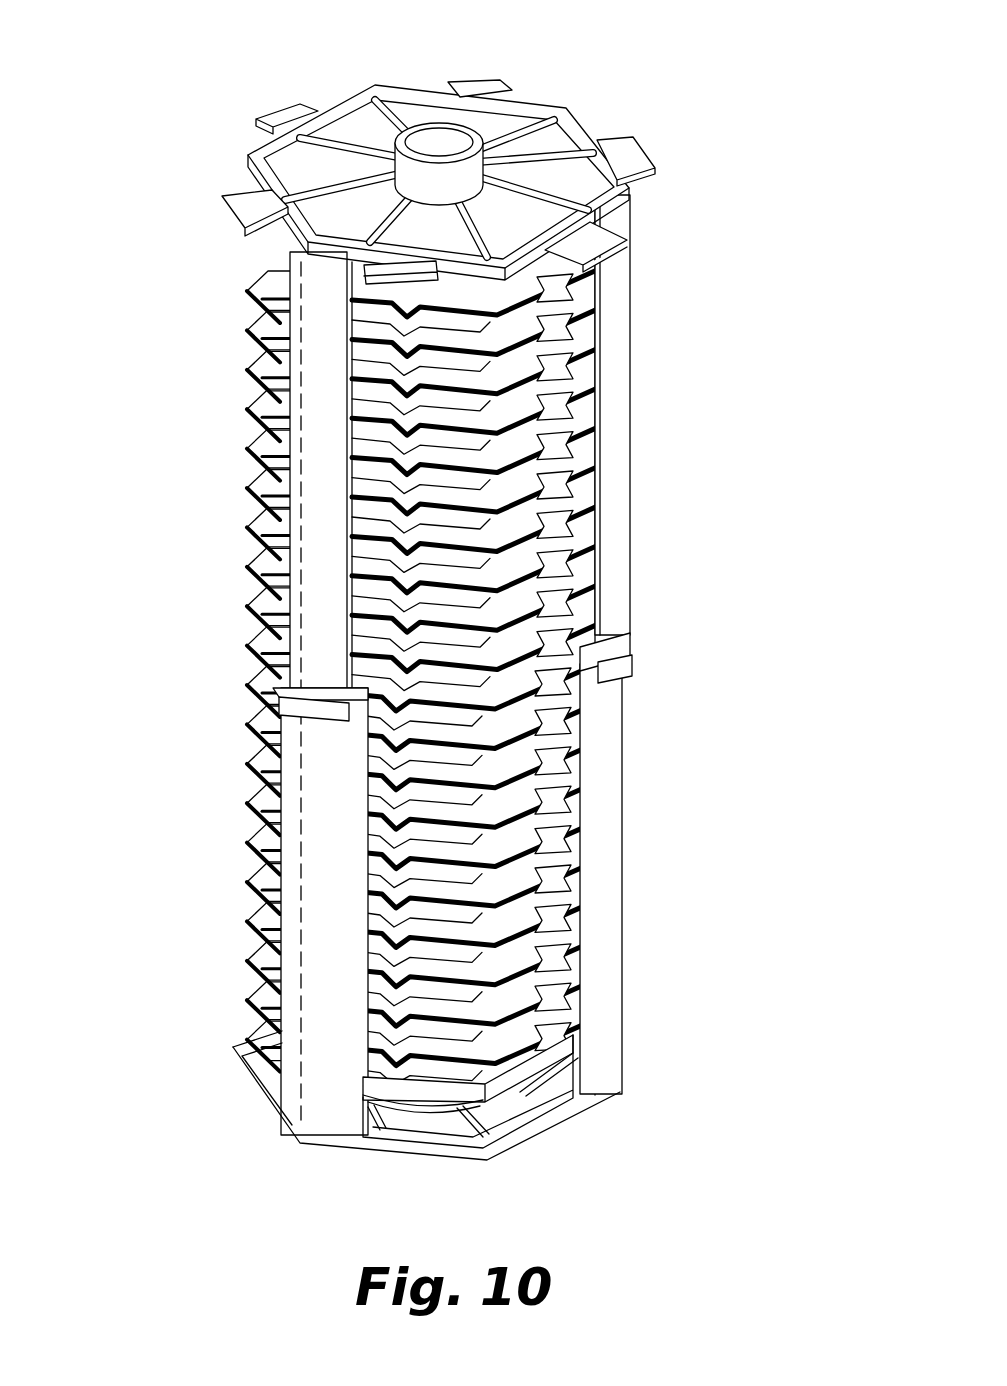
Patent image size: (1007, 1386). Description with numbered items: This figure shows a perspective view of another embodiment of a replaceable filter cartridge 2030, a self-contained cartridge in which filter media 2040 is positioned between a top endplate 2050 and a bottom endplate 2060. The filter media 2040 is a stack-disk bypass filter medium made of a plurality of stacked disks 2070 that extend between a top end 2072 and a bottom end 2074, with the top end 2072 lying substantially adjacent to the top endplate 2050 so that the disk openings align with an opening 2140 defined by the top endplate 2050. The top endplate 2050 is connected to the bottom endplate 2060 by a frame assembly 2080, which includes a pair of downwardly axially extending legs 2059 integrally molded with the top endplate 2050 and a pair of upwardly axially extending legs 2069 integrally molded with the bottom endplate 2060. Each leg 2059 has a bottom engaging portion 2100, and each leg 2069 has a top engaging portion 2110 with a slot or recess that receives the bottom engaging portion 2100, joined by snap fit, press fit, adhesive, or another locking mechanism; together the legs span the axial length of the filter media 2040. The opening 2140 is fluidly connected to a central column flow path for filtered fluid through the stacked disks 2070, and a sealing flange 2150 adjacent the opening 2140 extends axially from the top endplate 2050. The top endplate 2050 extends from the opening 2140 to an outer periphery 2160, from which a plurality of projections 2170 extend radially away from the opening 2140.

The replaceable filter cartridge 2030 is at (192, 557).
The filter media 2040 is at (195, 777).
The top endplate 2050 is at (600, 186).
The downwardly axially extending legs 2059 is at (320, 447).
The bottom endplate 2060 is at (510, 1118).
The upwardly axially extending legs 2069 is at (600, 815).
The plurality of stacked disks 2070 is at (265, 330).
The top end 2072 is at (270, 246).
The bottom end 2074 is at (510, 1032).
The frame assembly 2080 is at (702, 509).
The bottom engaging portion 2100 is at (618, 680).
The top engaging portion 2110 is at (624, 612).
The opening 2140 is at (437, 140).
The sealing flange 2150 is at (510, 130).
The outer periphery 2160 is at (248, 163).
The projections 2170 is at (290, 113).